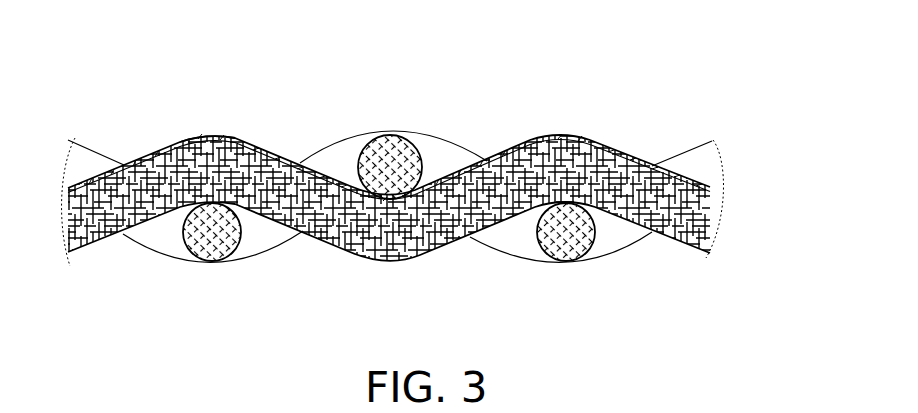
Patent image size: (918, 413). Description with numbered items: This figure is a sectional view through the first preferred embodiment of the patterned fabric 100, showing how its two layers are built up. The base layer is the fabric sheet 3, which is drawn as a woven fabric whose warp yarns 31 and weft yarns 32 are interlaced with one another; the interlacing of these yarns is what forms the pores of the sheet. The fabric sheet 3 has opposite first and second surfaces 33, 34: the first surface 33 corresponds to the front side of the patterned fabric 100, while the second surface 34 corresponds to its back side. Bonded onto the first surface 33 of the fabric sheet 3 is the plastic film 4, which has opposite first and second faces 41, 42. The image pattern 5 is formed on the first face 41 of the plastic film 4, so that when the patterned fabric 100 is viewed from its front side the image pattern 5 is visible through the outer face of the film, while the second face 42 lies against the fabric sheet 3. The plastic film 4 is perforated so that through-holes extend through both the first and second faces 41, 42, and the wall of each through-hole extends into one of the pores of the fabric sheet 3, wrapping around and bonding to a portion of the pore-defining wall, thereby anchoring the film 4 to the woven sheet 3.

The patterned fabric 100 is at (598, 43).
The fabric sheet 3 is at (669, 243).
The warp yarns 31 is at (690, 222).
The weft yarns 32 is at (543, 240).
The first surface 33 is at (118, 162).
The second surface 34 is at (312, 240).
The plastic film 4 is at (497, 152).
The first face 41 is at (147, 153).
The second face 42 is at (103, 180).
The image pattern 5 is at (193, 134).